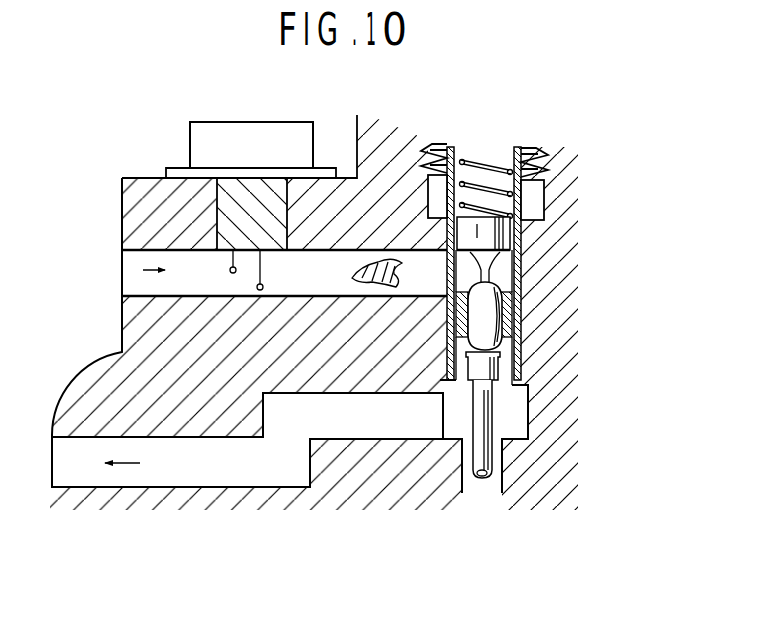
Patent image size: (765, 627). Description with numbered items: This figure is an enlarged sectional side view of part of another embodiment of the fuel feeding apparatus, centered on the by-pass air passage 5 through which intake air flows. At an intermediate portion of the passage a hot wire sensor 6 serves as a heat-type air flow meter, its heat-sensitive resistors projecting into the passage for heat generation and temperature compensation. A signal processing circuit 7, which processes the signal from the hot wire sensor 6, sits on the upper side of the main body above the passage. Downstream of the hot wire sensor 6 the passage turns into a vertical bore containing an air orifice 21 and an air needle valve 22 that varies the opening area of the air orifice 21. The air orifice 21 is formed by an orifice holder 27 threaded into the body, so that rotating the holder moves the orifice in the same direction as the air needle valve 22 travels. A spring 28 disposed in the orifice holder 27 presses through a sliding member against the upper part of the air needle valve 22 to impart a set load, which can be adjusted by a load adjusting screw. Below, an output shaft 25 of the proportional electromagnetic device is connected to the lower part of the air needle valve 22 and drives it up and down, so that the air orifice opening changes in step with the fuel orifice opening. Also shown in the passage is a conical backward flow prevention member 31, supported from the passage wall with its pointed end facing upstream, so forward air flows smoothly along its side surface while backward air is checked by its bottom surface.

The by-pass air passage 5 is at (133, 281).
The hot wire sensor 6 is at (242, 278).
The signal processing circuit 7 is at (190, 140).
The air orifice 21 is at (521, 318).
The air needle valve 22 is at (521, 352).
The output shaft 25 is at (485, 460).
The orifice holder 27 is at (525, 240).
The spring 28 is at (545, 187).
The conical backward flow prevention member 31 is at (356, 281).